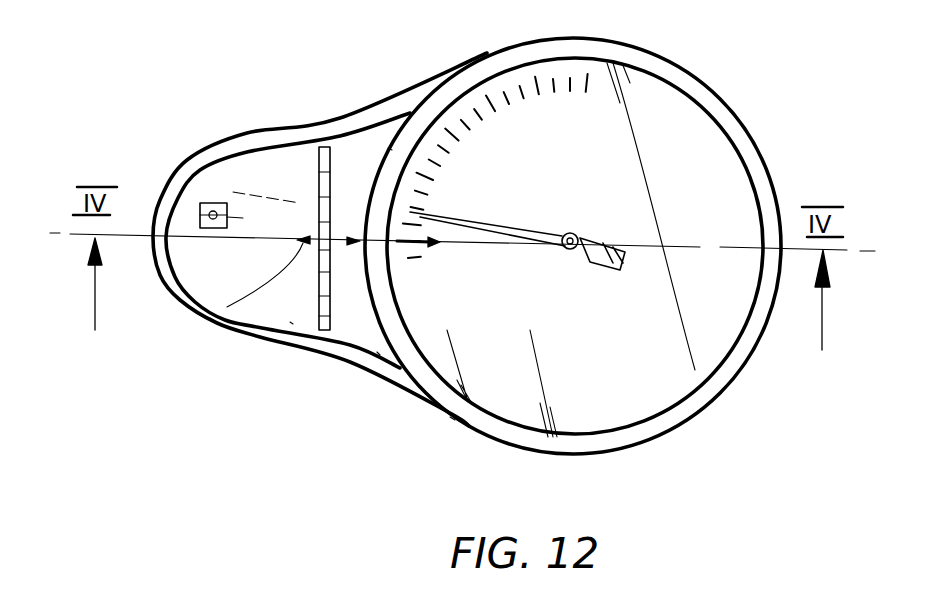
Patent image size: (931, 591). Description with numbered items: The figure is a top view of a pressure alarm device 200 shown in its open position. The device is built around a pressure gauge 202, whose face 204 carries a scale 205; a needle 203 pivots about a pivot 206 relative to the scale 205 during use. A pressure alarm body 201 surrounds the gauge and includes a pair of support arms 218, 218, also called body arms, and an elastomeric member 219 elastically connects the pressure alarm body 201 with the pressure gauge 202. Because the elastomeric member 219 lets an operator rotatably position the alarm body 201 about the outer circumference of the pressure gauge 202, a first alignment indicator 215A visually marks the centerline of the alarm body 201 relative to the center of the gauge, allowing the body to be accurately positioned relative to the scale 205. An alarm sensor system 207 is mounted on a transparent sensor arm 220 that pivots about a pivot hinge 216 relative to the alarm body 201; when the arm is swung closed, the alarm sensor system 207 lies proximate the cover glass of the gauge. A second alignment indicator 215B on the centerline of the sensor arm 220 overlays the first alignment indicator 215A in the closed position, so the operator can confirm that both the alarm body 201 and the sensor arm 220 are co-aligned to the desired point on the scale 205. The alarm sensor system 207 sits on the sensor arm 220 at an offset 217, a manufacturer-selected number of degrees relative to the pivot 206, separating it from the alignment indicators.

The pressure alarm device 200 is at (205, 88).
The pressure alarm body 201 is at (155, 205).
The pressure gauge 202 is at (495, 442).
The needle 203 is at (598, 265).
The face 204 is at (660, 385).
The scale 205 is at (478, 100).
The pivot 206 is at (563, 250).
The alarm sensor system 207 is at (168, 198).
The first alignment indicator 215A is at (290, 322).
The second alignment indicator 215B is at (210, 318).
The pivot hinge 216 is at (320, 152).
The offset 217 is at (290, 230).
The support arms 218 is at (390, 148).
The elastomeric member 219 is at (450, 417).
The sensor arm 220 is at (180, 287).